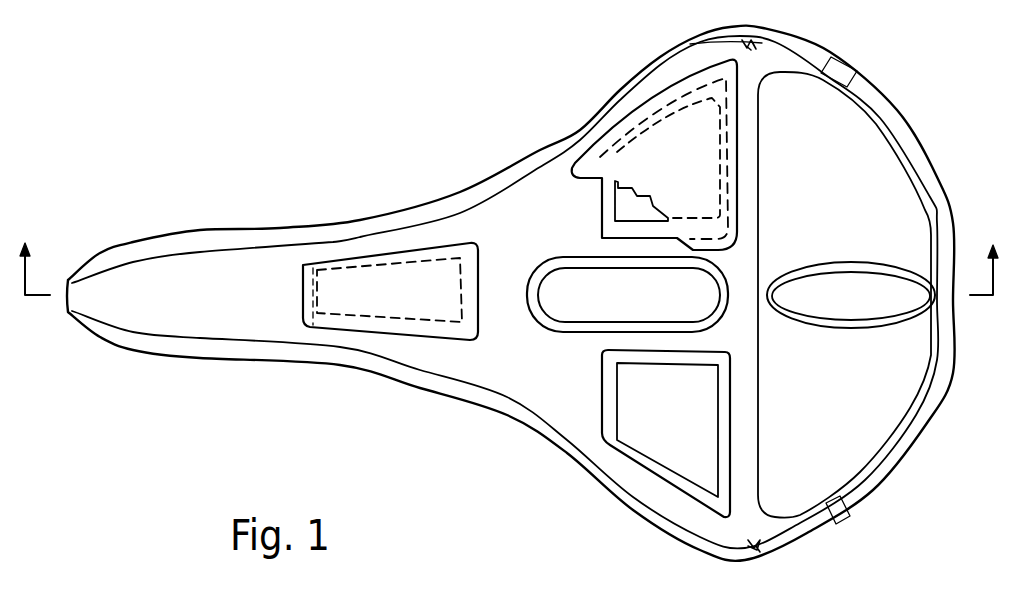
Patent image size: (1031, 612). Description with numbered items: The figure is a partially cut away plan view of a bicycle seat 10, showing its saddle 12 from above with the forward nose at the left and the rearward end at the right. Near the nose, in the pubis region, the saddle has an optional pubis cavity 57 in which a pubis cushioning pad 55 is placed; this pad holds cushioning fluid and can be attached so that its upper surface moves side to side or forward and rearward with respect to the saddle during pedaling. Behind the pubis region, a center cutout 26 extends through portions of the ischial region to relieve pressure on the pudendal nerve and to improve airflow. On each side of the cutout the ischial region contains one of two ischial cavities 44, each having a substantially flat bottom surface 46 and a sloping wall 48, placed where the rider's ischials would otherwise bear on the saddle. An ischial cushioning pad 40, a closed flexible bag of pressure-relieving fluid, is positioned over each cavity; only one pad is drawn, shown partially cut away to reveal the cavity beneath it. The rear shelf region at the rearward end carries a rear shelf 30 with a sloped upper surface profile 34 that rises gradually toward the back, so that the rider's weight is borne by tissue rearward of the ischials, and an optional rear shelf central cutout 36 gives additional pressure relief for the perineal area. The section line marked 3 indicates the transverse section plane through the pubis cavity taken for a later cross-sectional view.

The section line 3- 3 is at (508, 255).
The bicycle seat 10 is at (336, 109).
The saddle 12 is at (388, 212).
The center cutout 26 is at (639, 306).
The rear shelf 30 is at (877, 73).
The sloped upper surface profile 34 is at (856, 192).
The rear shelf central cutout 36 is at (903, 260).
The ischial cushioning pad 40 is at (660, 92).
The ischial cavity 44 is at (596, 204).
The flat bottom surface 46 is at (686, 417).
The sloping wall 48 is at (615, 231).
The pubis cushioning pad 55 is at (440, 337).
The pubis cavity 57 is at (300, 290).